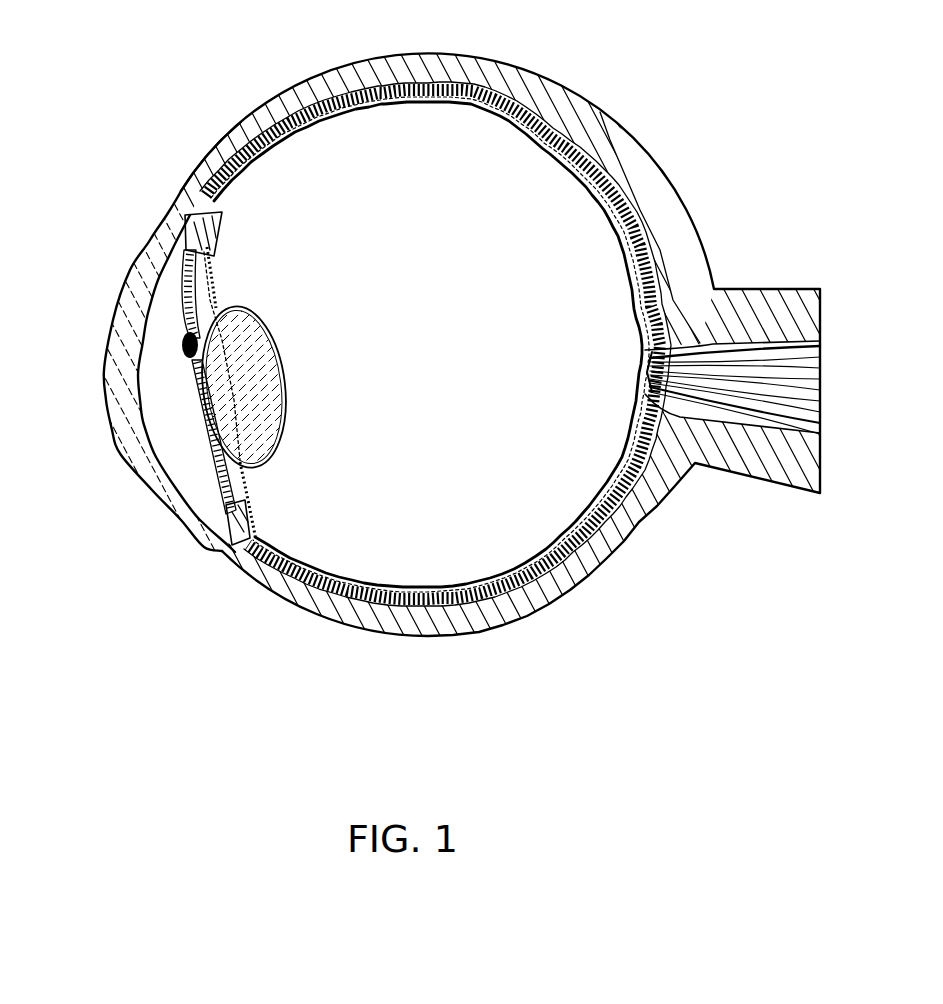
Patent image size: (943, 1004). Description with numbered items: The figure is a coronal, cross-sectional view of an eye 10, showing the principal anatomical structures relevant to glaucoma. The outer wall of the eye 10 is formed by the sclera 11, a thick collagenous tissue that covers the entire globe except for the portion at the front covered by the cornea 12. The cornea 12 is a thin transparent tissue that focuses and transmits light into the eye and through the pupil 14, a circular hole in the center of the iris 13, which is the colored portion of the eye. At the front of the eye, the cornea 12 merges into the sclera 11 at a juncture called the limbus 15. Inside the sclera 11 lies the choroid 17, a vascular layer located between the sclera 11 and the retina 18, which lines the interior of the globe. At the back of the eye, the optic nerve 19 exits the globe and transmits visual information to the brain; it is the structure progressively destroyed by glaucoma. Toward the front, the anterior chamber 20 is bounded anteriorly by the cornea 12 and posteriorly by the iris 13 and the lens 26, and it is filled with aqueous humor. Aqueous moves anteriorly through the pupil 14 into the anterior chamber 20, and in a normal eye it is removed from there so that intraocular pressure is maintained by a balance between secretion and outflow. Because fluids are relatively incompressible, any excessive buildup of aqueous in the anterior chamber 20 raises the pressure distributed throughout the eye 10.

The eye 10 is at (147, 511).
The sclera 11 is at (300, 97).
The cornea 12 is at (140, 456).
The iris 13 is at (180, 333).
The pupil 14 is at (180, 387).
The limbus 15 is at (230, 568).
The choroid 17 is at (197, 163).
The retina 18 is at (640, 318).
The optic nerve 19 is at (721, 372).
The anterior chamber 20 is at (197, 458).
The lens 26 is at (260, 330).